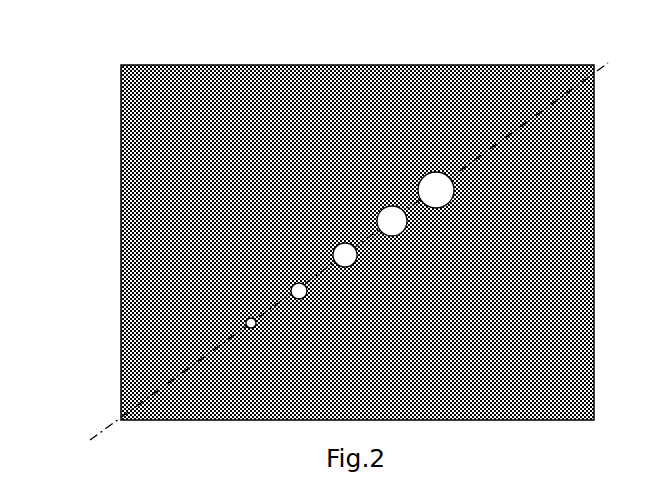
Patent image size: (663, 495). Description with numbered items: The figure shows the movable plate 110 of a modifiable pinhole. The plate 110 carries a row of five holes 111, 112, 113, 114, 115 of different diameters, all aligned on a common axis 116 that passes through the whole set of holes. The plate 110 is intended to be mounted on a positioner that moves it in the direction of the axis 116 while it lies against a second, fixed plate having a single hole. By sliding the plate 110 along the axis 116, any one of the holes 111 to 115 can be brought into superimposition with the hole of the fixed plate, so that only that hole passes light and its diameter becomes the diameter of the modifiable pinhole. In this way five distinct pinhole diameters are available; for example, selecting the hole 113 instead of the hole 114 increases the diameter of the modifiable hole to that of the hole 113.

The plate 110 is at (111, 134).
The hole 111 is at (425, 185).
The hole 112 is at (382, 206).
The hole 113 is at (334, 240).
The hole 114 is at (288, 275).
The hole 115 is at (239, 311).
The axis 116 is at (97, 414).